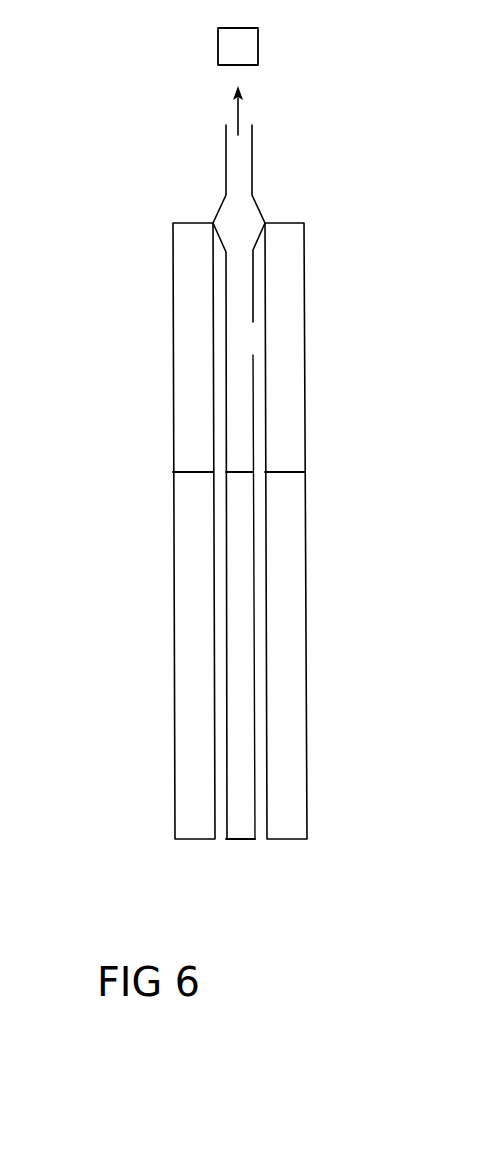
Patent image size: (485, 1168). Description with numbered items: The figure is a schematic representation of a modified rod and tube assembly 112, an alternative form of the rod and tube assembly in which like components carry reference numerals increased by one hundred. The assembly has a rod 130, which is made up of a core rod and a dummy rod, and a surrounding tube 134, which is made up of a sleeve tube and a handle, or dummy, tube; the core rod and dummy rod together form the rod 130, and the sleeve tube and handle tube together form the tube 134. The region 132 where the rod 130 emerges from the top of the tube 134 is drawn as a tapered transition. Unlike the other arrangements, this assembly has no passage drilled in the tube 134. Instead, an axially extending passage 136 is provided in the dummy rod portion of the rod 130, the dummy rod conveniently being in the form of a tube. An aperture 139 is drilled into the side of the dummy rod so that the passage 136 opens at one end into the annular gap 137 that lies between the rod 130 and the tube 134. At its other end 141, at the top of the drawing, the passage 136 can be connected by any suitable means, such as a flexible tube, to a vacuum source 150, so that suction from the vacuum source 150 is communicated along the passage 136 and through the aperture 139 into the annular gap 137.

The modified rod and tube assembly 112 is at (118, 205).
The vacuum source 150 is at (258, 40).
The other end of the passage 141 is at (247, 117).
The rod 130 is at (258, 184).
The tapered junction of capillary 132 is at (254, 221).
The axially extending passage 136 is at (235, 285).
The aperture 139 is at (253, 340).
The annular gap 137 is at (255, 563).
The tube 134 is at (308, 637).